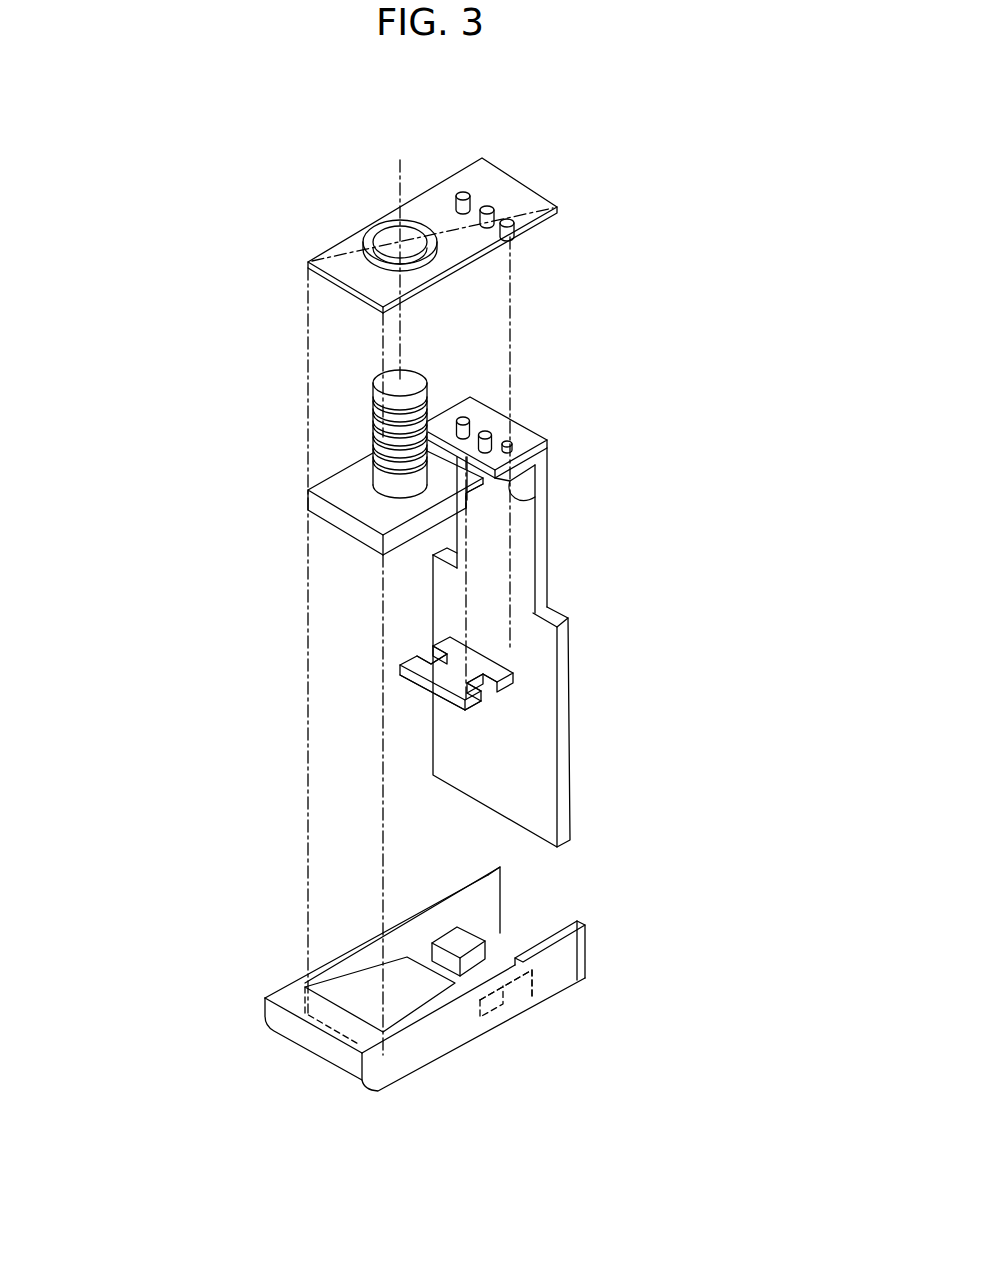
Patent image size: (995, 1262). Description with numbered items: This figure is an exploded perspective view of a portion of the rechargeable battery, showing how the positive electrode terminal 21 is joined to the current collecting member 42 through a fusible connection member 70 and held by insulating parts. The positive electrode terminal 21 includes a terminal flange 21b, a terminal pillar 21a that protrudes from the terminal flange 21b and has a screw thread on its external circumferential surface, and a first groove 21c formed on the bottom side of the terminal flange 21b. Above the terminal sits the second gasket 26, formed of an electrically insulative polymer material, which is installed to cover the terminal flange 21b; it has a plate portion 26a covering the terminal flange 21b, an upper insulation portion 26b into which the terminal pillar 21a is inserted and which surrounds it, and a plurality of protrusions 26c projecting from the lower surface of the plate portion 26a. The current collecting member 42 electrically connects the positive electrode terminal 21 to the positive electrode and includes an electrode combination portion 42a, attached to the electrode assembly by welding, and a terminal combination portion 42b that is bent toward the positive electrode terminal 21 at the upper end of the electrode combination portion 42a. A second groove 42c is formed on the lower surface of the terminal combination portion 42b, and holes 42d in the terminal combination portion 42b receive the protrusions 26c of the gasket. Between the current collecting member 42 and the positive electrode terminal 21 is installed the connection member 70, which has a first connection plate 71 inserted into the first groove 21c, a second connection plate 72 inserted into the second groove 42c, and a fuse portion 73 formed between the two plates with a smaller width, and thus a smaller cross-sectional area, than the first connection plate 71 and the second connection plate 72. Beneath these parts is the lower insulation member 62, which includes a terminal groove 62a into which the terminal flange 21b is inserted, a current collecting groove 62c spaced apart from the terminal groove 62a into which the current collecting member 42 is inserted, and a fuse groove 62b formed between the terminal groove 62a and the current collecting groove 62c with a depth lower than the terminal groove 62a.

The positive electrode terminal 21 is at (353, 452).
The terminal pillar 21a is at (373, 423).
The terminal flange 21b is at (338, 490).
The first groove 21c is at (476, 491).
The second gasket 26 is at (525, 170).
The plate portion 26a is at (475, 182).
The upper insulation portion 26b is at (375, 225).
The protrusions 26c is at (509, 237).
The current collecting member 42 is at (545, 592).
The electrode combination portion 42a is at (531, 777).
The terminal combination portion 42b is at (527, 438).
The second groove 42c is at (500, 480).
The holes 42d is at (510, 443).
The lower insulation member 62 is at (452, 987).
The terminal groove 62a is at (402, 1000).
The fuse groove 62b is at (470, 957).
The current collecting groove 62c is at (466, 943).
The connection member 70 is at (475, 686).
The first connection plate 71 is at (456, 670).
The second connection plate 72 is at (482, 676).
The fuse portion 73 is at (437, 676).